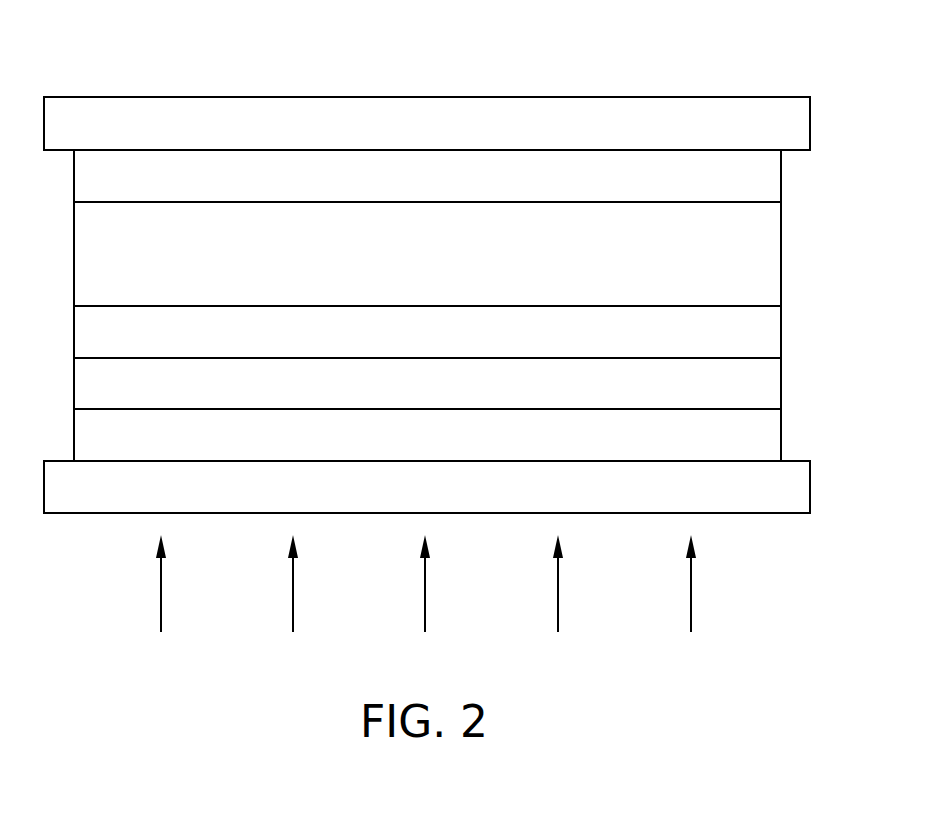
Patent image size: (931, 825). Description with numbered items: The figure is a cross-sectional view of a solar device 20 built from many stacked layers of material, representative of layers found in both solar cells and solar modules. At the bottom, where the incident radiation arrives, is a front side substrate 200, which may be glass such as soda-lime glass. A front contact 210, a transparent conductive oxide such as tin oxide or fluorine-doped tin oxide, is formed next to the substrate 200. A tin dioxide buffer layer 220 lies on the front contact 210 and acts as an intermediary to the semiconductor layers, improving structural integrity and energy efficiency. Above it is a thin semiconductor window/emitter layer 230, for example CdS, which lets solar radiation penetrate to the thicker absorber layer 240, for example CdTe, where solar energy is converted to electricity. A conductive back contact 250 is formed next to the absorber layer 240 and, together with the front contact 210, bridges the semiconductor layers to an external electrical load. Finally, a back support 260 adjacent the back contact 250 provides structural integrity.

The solar device 20 is at (698, 75).
The front side substrate 200 is at (406, 500).
The front contact 210 is at (406, 446).
The tin dioxide buffer layer 220 is at (406, 396).
The window/emitter layer 230 is at (406, 344).
The absorber layer 240 is at (406, 270).
The back contact 250 is at (406, 188).
The back support 260 is at (406, 140).